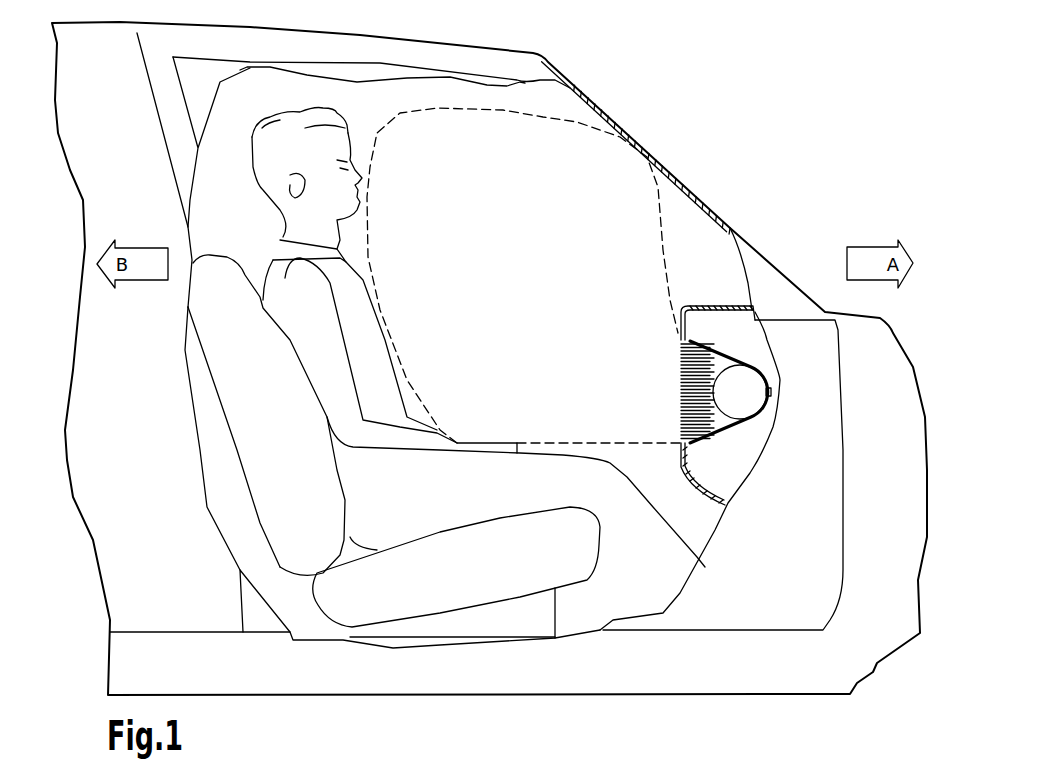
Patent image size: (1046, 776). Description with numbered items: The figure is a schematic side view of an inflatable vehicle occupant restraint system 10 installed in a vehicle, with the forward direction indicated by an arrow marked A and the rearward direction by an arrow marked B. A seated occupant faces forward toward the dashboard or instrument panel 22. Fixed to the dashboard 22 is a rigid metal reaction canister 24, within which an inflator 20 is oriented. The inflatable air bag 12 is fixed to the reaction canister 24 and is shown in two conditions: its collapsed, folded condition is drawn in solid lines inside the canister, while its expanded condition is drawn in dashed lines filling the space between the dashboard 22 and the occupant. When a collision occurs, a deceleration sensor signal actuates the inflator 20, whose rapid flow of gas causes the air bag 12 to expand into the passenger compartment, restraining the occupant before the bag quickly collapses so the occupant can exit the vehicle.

The inflatable vehicle occupant restraint system 10 is at (661, 125).
The inflatable air bag 12 is at (577, 122).
The inflator 20 is at (742, 384).
The dashboard or instrument panel 22 is at (717, 305).
The reaction canister 24 is at (742, 322).